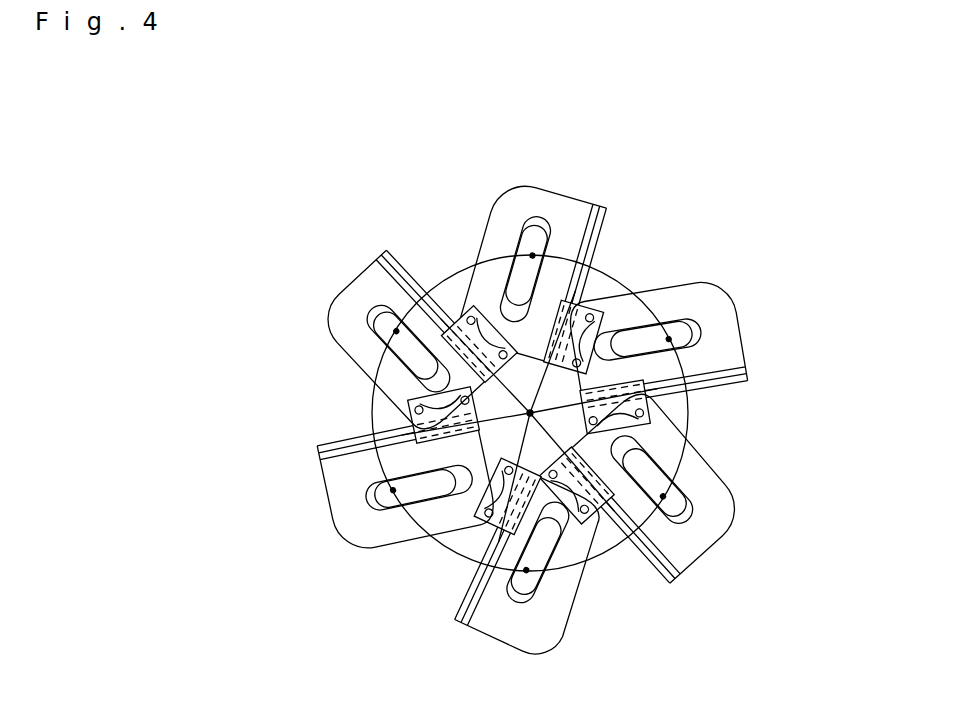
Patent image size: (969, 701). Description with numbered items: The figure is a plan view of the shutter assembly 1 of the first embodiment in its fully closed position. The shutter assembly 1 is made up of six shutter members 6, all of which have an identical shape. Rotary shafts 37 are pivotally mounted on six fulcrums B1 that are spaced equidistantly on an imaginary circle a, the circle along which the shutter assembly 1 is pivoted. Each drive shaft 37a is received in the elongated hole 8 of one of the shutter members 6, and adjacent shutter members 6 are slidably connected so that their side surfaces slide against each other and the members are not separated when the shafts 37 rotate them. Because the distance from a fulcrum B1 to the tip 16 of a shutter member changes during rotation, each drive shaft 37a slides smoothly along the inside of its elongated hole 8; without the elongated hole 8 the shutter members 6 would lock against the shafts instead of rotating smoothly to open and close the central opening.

The shutter assembly 1 is at (290, 341).
The imaginary circle a is at (613, 280).
The fulcrum B1 is at (666, 338).
The drive shaft 37a is at (707, 452).
The rotary shaft 37 is at (668, 497).
The elongated hole 8 is at (700, 513).
The shutter member 6 is at (695, 580).
The tip 16 is at (432, 535).